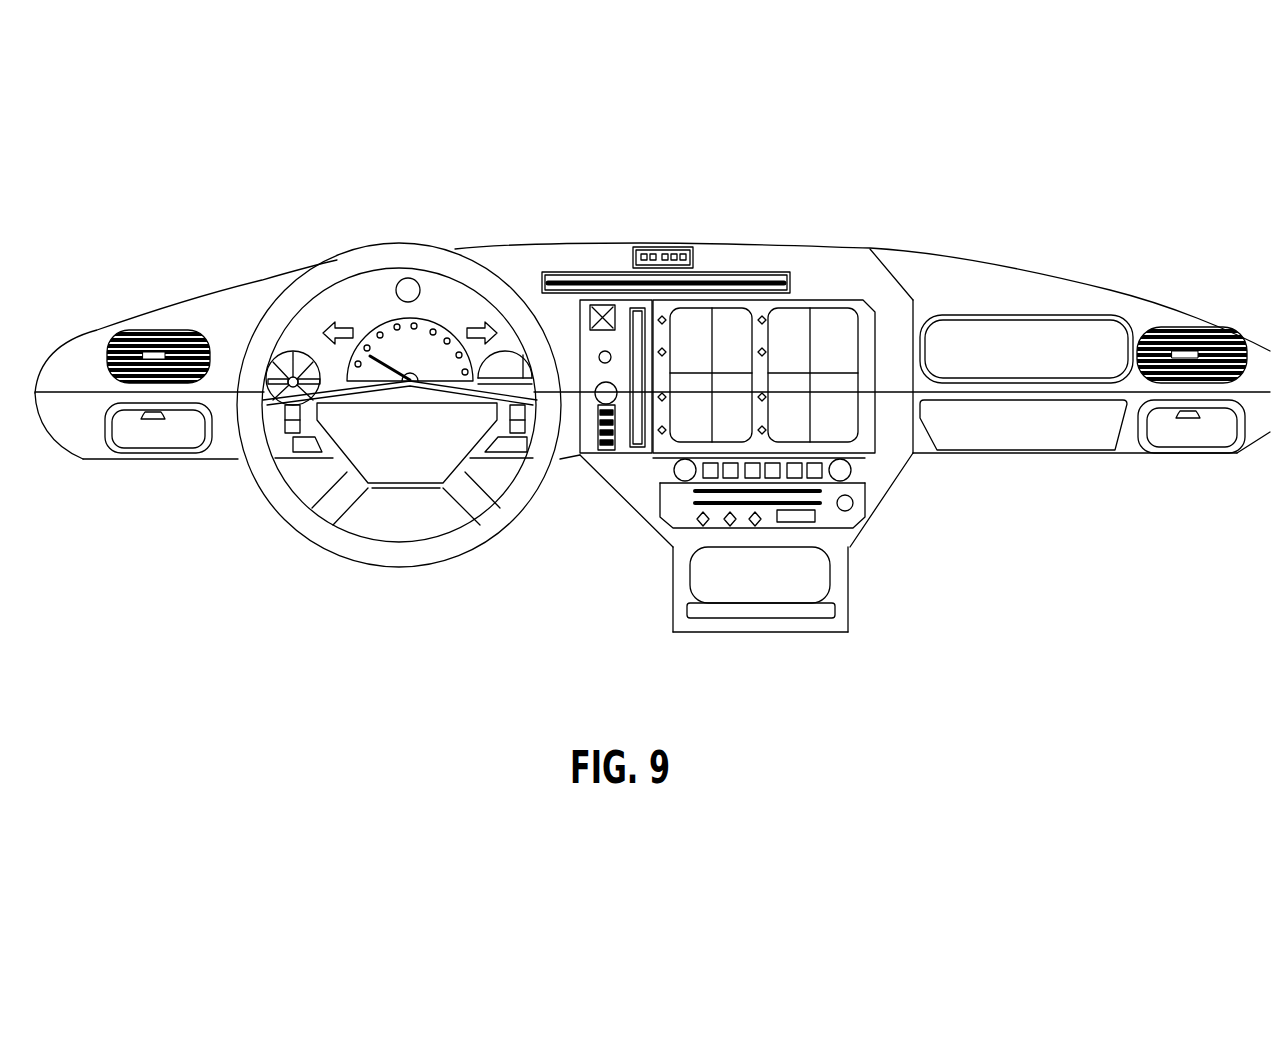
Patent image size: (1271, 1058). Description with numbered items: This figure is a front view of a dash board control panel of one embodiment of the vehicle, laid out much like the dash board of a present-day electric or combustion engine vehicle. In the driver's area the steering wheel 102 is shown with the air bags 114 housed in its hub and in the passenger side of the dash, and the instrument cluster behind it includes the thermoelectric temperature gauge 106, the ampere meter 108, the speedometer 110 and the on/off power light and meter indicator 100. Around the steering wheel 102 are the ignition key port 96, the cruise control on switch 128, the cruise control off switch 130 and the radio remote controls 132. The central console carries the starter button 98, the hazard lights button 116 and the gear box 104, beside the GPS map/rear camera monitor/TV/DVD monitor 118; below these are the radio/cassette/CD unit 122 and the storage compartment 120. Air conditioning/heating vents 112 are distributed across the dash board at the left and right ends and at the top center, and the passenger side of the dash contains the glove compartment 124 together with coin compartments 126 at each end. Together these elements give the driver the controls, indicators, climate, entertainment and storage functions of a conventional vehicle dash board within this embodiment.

The ignition key port 96 is at (399, 409).
The starter button 98 is at (608, 352).
The on/off power light and meter indicator 100 is at (408, 278).
The steering wheel 102 is at (435, 258).
The gear box 104 is at (595, 366).
The thermoelectric temperature gauge 106 is at (355, 300).
The ampere meter 108 is at (292, 358).
The speedometer 110 is at (390, 353).
The air conditioning/heating vents 112 is at (738, 282).
The air bags 114 is at (1013, 330).
The hazard lights button 116 is at (600, 312).
The GPS map/rear camera monitor/TV/DVD monitor 118 is at (702, 403).
The storage compartment 120 is at (733, 578).
The radio/cassette/CD unit 122 is at (762, 498).
The glove compartment 124 is at (1030, 438).
The coin compartment 126 is at (147, 442).
The cruise control on switch 128 is at (288, 436).
The cruise control off switch 130 is at (292, 413).
The radio remote controls 132 is at (517, 447).